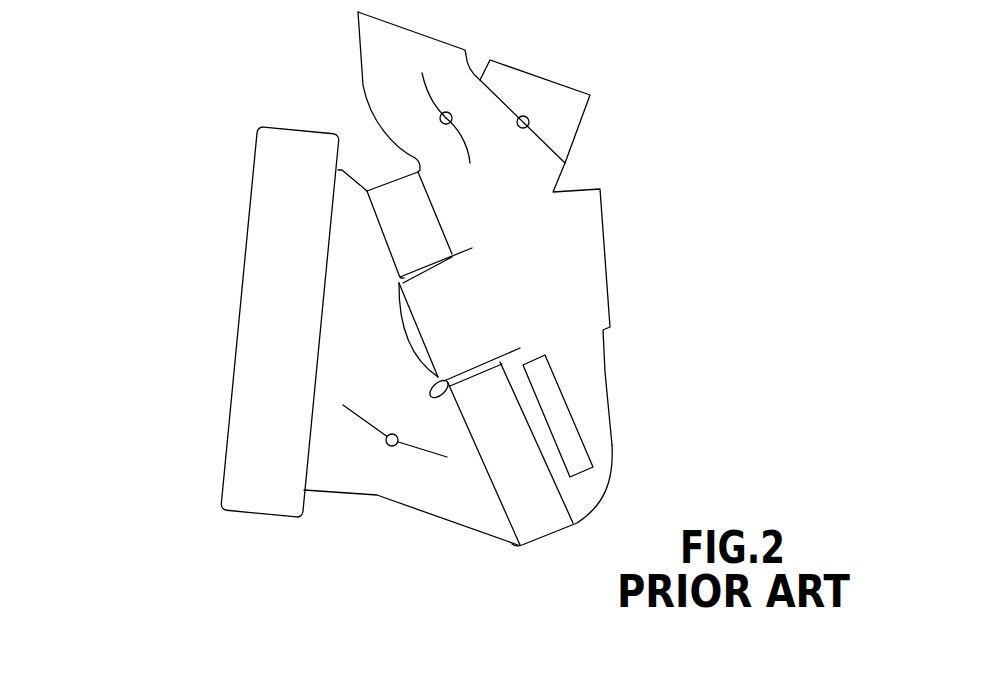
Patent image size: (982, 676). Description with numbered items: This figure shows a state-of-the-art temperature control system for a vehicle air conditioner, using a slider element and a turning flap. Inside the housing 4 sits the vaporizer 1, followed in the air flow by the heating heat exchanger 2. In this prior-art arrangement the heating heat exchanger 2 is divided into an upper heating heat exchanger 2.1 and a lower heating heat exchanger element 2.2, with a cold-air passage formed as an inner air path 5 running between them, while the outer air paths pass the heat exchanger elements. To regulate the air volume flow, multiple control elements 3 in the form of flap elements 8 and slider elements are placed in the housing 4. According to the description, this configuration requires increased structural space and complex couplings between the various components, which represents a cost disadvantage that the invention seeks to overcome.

The vaporizer 1 is at (270, 413).
The heating heat exchanger 2 is at (542, 530).
The upper heating heat exchanger 2.1 is at (440, 198).
The lower heating heat exchanger element 2.2 is at (523, 431).
The control elements 3 is at (386, 303).
The housing 4 is at (203, 193).
The inner air path 5 is at (481, 303).
The flap elements 8 is at (385, 450).